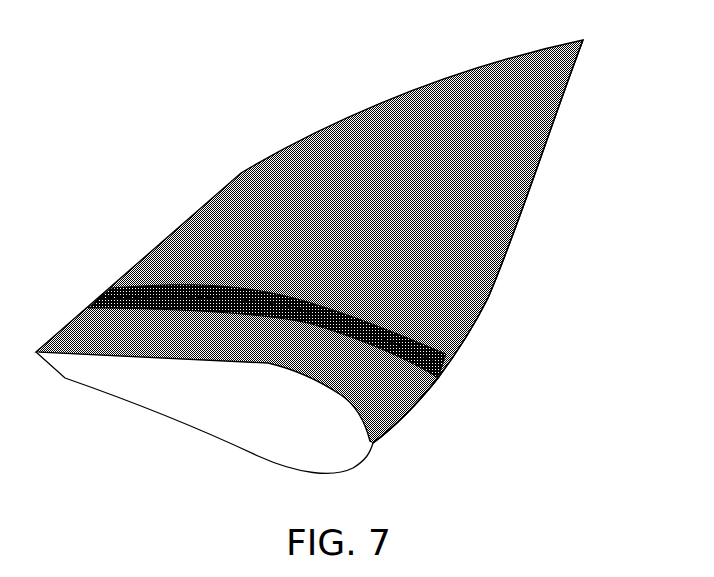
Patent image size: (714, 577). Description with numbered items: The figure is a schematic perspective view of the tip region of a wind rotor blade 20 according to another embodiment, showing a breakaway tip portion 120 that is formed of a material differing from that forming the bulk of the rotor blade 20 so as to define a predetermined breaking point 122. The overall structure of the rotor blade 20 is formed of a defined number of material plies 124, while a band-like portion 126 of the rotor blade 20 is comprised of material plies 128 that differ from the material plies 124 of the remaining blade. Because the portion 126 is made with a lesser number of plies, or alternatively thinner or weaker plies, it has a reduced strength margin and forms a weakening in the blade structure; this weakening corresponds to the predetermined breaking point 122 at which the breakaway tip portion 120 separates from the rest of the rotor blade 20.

The rotor blade 20 is at (363, 262).
The breakaway tip portion 120 is at (535, 150).
The predetermined breaking point 122 is at (427, 378).
The material plies 124 is at (497, 250).
The portion 126 is at (335, 331).
The material plies 128 is at (440, 340).